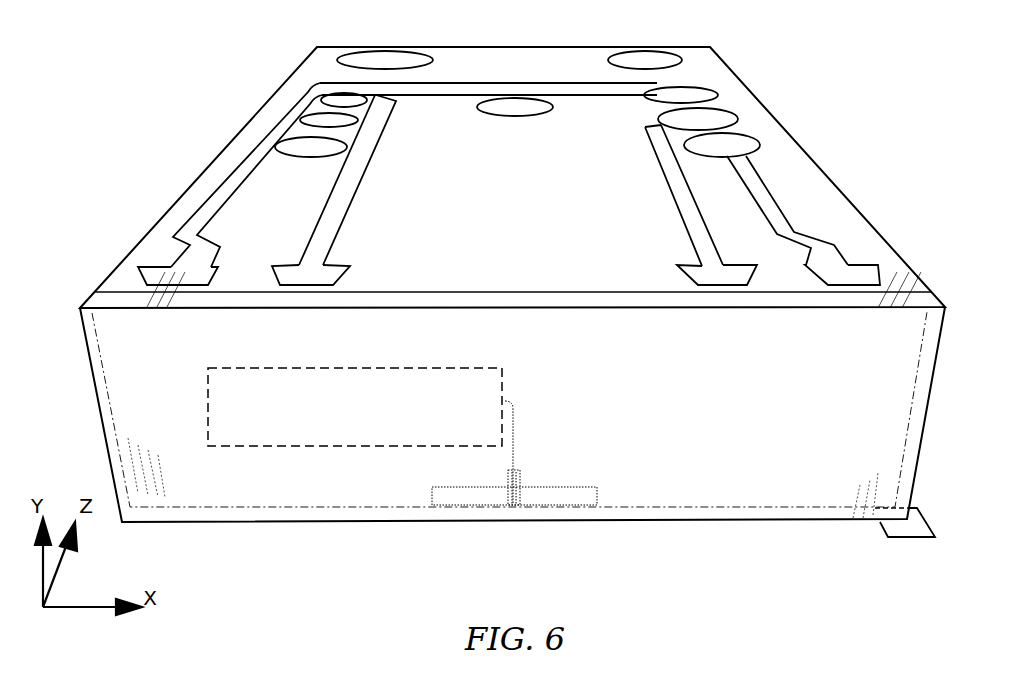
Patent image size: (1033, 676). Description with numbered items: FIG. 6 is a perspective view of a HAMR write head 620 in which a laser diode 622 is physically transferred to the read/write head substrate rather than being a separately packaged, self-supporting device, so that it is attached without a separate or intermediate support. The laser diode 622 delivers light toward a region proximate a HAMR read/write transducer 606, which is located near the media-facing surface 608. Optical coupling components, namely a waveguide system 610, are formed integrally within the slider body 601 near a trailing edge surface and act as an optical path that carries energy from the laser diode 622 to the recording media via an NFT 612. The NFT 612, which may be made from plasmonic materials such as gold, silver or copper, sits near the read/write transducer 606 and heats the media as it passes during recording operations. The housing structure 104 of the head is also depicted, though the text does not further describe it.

The housing 104 is at (190, 495).
The slider body 601 is at (289, 78).
The HAMR write head 620 is at (838, 162).
The laser diode 622 is at (360, 392).
The waveguide system 610 is at (518, 438).
The HAMR read/write transducer 606 is at (520, 505).
The NFT 612 is at (513, 507).
The media-facing surface 608 is at (922, 538).